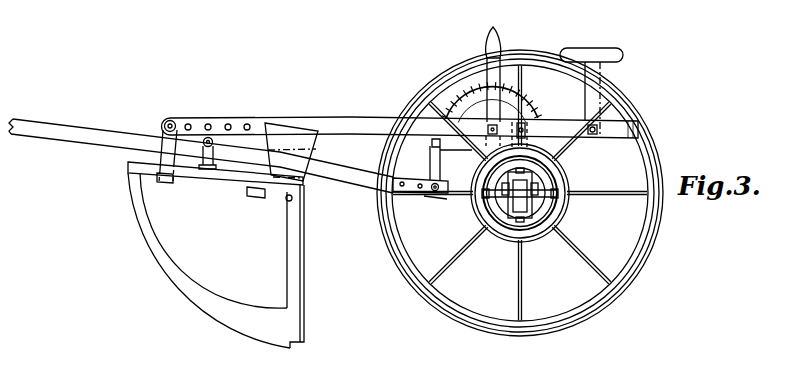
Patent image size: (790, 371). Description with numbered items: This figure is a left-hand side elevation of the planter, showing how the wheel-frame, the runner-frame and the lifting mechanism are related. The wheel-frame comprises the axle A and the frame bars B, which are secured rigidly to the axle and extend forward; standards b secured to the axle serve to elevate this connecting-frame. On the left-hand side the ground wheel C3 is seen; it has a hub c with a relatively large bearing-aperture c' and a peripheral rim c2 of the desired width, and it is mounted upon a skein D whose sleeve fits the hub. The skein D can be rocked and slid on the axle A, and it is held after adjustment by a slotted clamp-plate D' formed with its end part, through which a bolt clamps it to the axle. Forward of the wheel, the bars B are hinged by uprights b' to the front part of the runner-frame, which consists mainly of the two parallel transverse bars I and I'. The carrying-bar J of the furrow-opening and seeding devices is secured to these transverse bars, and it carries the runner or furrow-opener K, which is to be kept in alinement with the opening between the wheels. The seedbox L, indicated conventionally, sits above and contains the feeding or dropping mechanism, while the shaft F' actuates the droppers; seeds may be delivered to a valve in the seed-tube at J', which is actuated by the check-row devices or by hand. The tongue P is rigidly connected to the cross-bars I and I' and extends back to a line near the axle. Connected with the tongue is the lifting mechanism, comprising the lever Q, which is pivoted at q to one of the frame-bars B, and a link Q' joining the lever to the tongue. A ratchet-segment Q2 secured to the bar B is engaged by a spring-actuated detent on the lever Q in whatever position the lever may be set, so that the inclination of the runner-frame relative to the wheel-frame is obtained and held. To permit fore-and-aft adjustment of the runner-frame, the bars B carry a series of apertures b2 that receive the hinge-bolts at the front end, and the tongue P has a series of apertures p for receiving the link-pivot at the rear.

The tongue P is at (48, 118).
The series of apertures b2 is at (229, 121).
The frame bars B is at (336, 118).
The uprights b' is at (161, 130).
The seedbox L is at (285, 121).
The carrying-bar J is at (193, 173).
The transverse bar I is at (166, 195).
The transverse bar I' is at (248, 203).
The shaft F' is at (310, 204).
The seed-tube valve location J' is at (309, 266).
The runner K is at (190, 297).
The left-hand wheel C3 is at (520, 195).
The peripheral rim c2 is at (567, 181).
The skein D is at (512, 214).
The slotted clamp-plate D' is at (473, 203).
The bearing-aperture c' is at (546, 218).
The hub c is at (487, 203).
The axle A is at (546, 193).
The link Q' is at (436, 159).
The series of apertures p is at (418, 190).
The lever Q is at (509, 77).
The ratchet-segment Q2 is at (515, 100).
The standard b is at (539, 113).
The lever pivot q is at (489, 119).